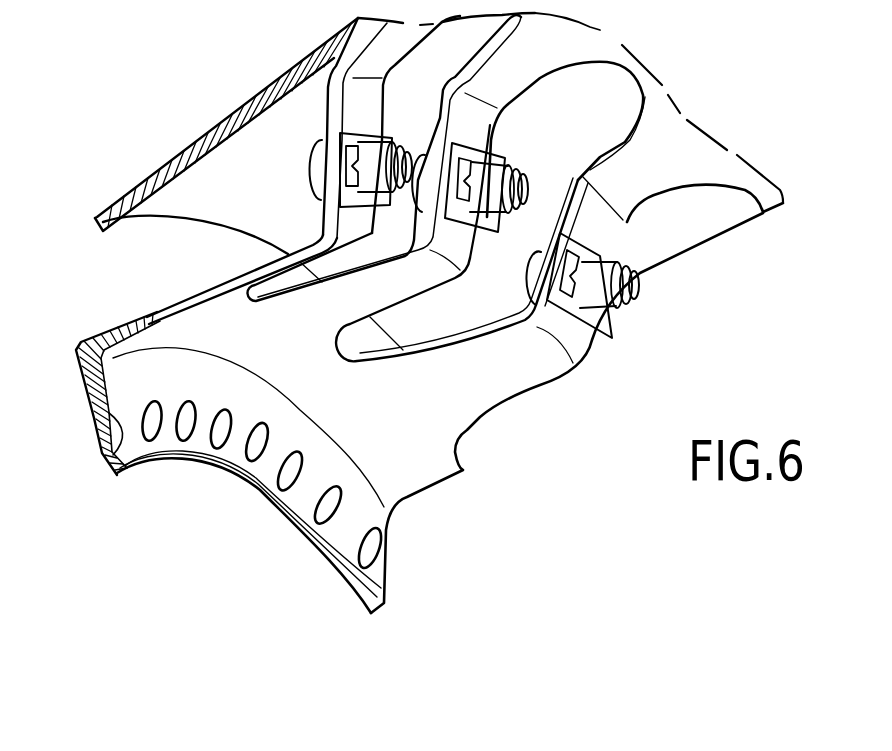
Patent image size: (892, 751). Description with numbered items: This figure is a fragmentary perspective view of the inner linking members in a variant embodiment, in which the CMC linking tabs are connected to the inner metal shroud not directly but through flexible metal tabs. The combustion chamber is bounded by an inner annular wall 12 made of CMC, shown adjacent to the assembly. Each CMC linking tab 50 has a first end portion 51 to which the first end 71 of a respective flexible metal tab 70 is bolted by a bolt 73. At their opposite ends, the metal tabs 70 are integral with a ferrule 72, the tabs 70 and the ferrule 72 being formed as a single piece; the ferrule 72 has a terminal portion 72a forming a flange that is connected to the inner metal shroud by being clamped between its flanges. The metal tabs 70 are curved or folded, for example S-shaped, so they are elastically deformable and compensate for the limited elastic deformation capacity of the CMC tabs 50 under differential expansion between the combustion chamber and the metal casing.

The inner annular wall 12 is at (160, 183).
The linking tab 50 is at (600, 190).
The end portion 51 is at (520, 278).
The flexible metal tab 70 is at (243, 272).
The first end 71 is at (337, 186).
The ferrule 72 is at (122, 318).
The terminal portion 72a is at (363, 503).
The bolt 73 is at (500, 160).